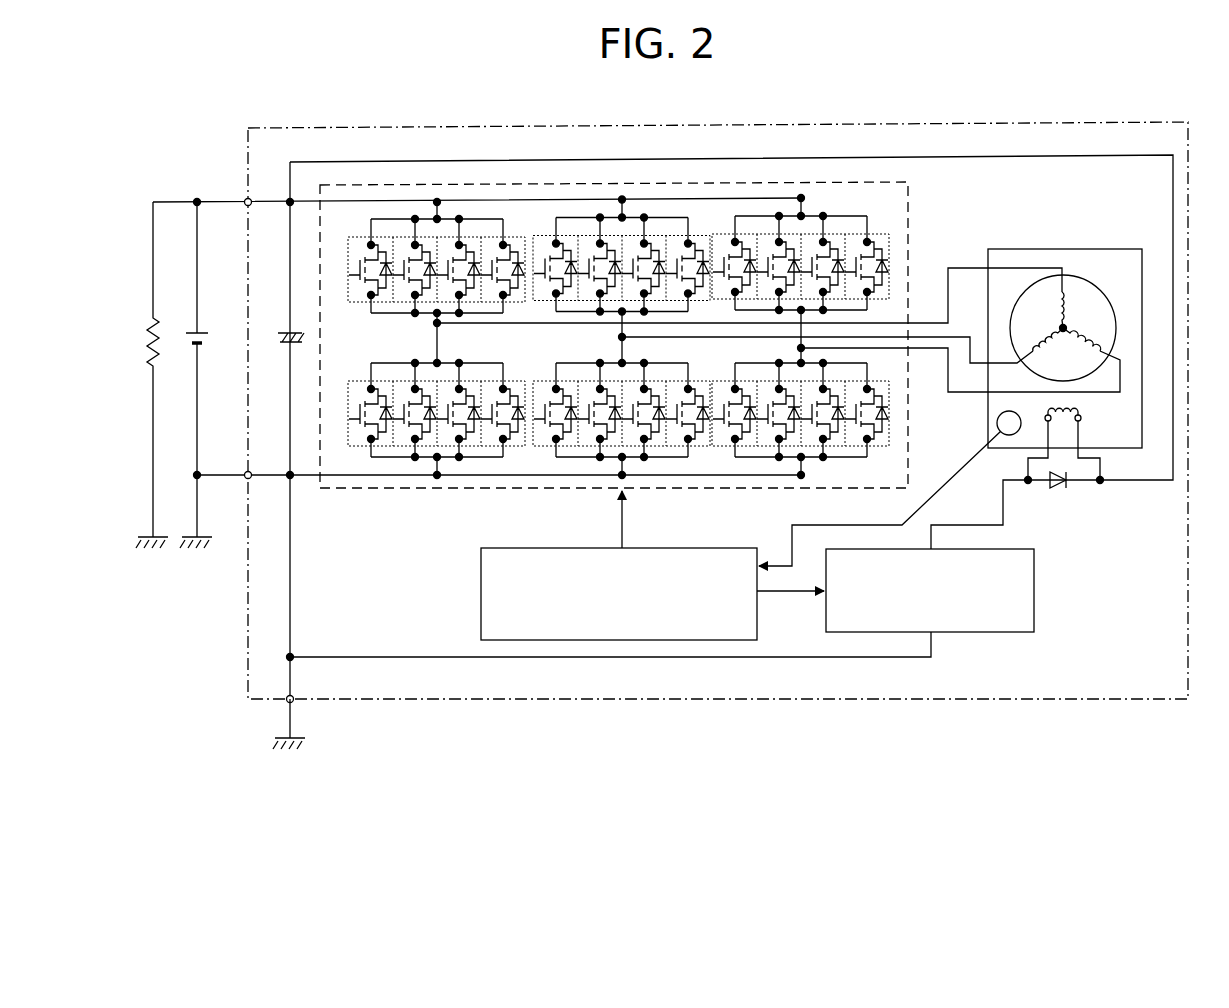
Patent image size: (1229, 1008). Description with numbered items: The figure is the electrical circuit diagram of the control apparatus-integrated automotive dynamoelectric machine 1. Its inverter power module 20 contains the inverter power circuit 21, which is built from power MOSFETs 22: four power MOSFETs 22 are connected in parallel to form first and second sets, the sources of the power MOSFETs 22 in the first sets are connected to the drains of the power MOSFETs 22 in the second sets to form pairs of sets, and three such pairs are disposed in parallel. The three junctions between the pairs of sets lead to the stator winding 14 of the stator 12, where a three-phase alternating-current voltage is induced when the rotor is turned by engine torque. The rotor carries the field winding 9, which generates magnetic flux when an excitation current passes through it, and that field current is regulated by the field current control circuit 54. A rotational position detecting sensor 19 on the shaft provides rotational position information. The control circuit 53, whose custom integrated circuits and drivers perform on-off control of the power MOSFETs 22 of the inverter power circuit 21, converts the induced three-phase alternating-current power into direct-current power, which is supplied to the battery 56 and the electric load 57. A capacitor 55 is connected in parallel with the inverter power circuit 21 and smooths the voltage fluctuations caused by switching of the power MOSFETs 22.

The control apparatus-integrated automotive dynamoelectric machine 1 is at (246, 134).
The inverter power module 20 is at (351, 182).
The inverter power circuit 21 is at (400, 489).
The power MOSFET 22 is at (352, 449).
The stator 12 is at (1079, 330).
The stator winding 14 is at (1098, 330).
The field winding 9 is at (1090, 408).
The rotational position detecting sensor 19 is at (1003, 437).
The control circuit 53 is at (481, 583).
The field current control circuit 54 is at (1040, 593).
The capacitor 55 is at (283, 330).
The battery 56 is at (206, 330).
The electric load 57 is at (159, 330).